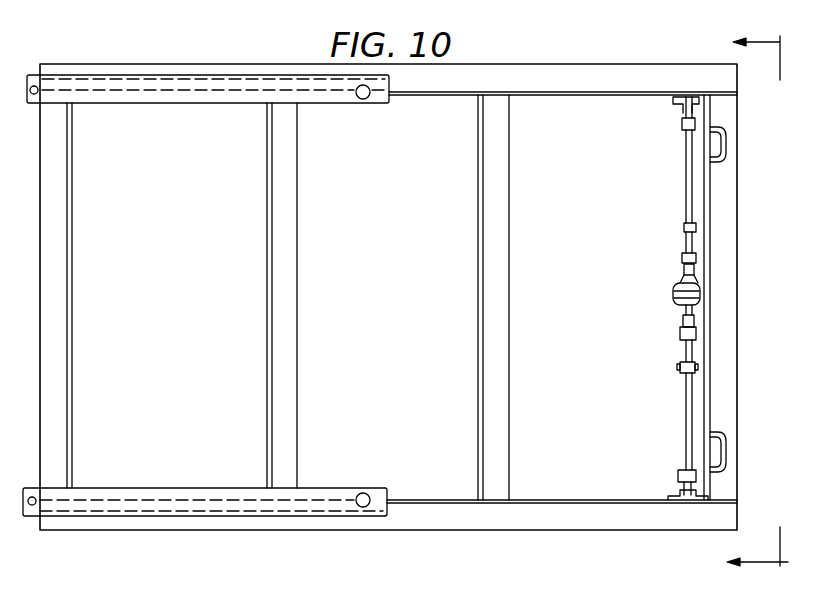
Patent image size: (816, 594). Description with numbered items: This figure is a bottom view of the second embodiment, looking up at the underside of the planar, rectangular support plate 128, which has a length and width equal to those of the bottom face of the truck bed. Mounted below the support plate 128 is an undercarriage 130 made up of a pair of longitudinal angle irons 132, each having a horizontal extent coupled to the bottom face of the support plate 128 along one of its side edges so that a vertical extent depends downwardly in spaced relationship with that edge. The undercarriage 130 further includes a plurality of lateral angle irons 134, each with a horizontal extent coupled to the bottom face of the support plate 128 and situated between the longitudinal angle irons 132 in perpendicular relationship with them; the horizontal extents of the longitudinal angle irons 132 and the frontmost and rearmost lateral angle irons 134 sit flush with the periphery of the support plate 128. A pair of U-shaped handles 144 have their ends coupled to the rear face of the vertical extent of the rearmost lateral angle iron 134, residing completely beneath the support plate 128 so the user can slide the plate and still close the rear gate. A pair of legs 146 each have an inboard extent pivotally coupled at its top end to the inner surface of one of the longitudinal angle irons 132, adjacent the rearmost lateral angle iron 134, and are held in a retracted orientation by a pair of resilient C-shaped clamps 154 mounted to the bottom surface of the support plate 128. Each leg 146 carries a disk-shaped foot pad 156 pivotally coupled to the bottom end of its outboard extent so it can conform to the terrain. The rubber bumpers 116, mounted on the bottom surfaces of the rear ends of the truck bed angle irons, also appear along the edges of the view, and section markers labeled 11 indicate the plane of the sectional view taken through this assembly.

The rubber bumper 116 is at (363, 508).
The support plate 128 is at (659, 297).
The undercarriage 130 is at (463, 64).
The longitudinal angle irons 132 is at (583, 75).
The lateral angle irons 134 is at (73, 226).
The U-shaped handles 144 is at (712, 458).
The legs 146 is at (687, 171).
The resilient C-shaped clamps 154 is at (684, 228).
The foot pad 156 is at (676, 292).
The section line 11- 11 is at (738, 306).